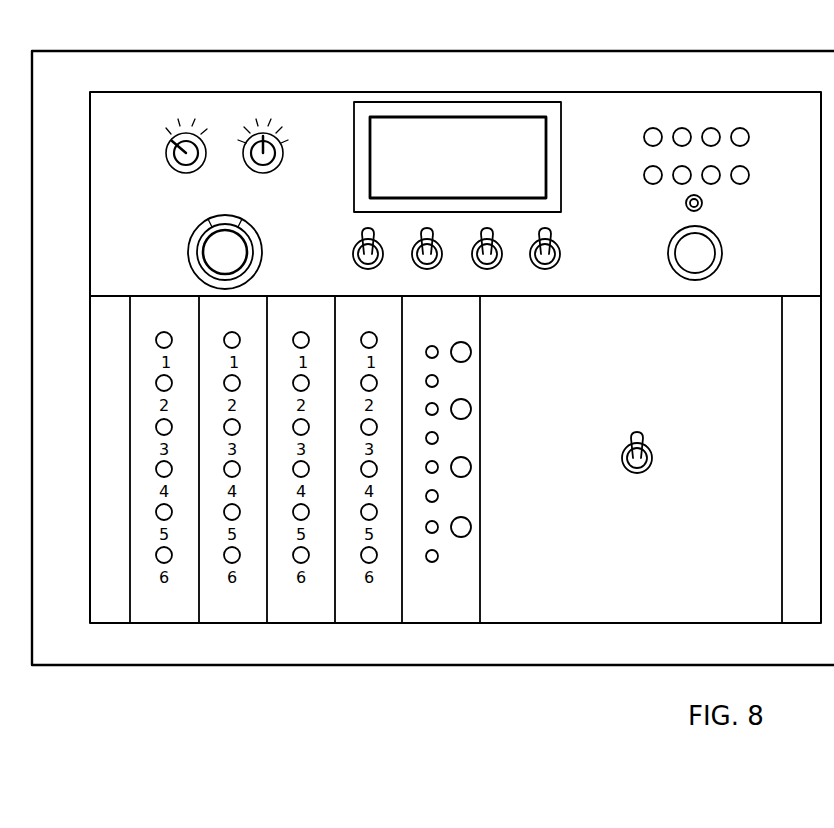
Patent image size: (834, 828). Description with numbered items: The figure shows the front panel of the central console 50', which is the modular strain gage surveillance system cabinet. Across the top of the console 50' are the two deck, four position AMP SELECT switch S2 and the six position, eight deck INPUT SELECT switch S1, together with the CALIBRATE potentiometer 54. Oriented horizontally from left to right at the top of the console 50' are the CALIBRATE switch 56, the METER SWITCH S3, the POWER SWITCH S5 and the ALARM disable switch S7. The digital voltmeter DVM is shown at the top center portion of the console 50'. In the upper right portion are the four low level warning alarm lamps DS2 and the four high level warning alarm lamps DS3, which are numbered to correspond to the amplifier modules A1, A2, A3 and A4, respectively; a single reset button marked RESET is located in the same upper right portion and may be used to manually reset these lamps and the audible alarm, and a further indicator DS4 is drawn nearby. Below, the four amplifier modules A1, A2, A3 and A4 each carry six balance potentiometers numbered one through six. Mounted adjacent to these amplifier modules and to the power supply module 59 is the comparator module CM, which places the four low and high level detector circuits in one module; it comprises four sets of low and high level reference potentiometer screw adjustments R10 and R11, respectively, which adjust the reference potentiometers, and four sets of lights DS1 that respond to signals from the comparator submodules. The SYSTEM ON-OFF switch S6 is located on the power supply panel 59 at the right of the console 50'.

The central console 50' is at (433, 340).
The digital voltmeter DVM is at (467, 125).
The AMP SELECT switch S2 is at (169, 163).
The INPUT SELECT switch S1 is at (283, 161).
The CALIBRATE potentiometer 54 is at (189, 262).
The CALIBRATE switch 56 is at (355, 260).
The METER SWITCH S3 is at (414, 260).
The POWER SWITCH S5 is at (474, 260).
The ALARM disable switch S7 is at (559, 253).
The low level warning alarm lamps DS2 is at (647, 130).
The high level warning alarm lamps DS3 is at (644, 174).
The amplifier module A1 is at (150, 612).
The amplifier module A2 is at (218, 612).
The amplifier module A3 is at (287, 612).
The amplifier module A4 is at (355, 612).
The reset button RESET is at (703, 203).
The indicator lamp DS4 is at (719, 243).
The low level reference potentiometer screw adjustment R10 is at (431, 345).
The high level reference potentiometer screw adjustment R11 is at (439, 383).
The lights DS1 is at (471, 349).
The SYSTEM ON-OFF switch S6 is at (630, 472).
The comparator module CM is at (272, 624).
The power supply panel 59 is at (590, 612).